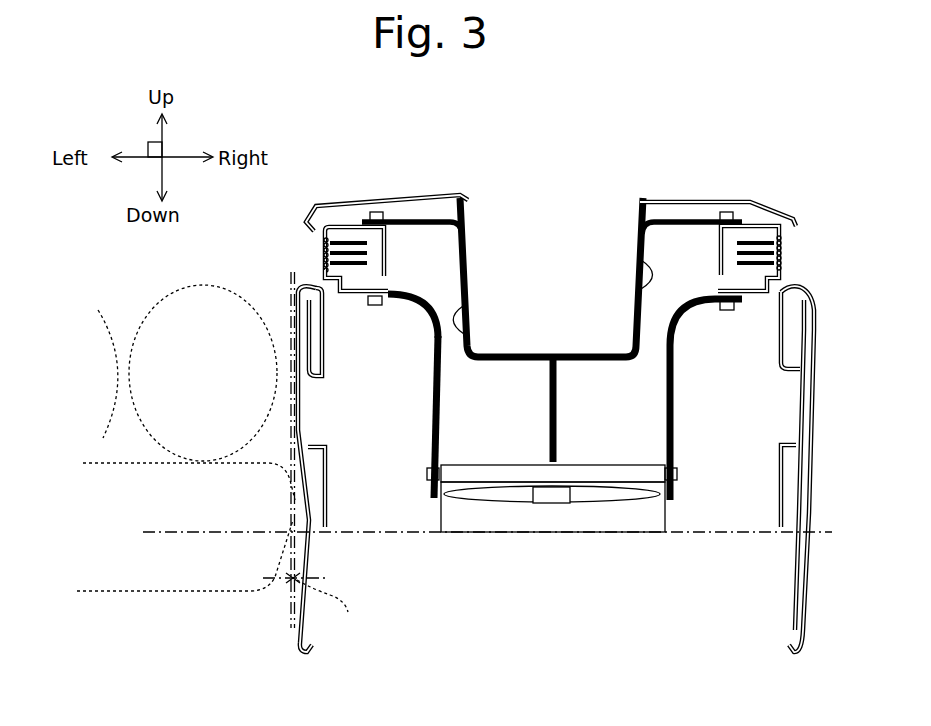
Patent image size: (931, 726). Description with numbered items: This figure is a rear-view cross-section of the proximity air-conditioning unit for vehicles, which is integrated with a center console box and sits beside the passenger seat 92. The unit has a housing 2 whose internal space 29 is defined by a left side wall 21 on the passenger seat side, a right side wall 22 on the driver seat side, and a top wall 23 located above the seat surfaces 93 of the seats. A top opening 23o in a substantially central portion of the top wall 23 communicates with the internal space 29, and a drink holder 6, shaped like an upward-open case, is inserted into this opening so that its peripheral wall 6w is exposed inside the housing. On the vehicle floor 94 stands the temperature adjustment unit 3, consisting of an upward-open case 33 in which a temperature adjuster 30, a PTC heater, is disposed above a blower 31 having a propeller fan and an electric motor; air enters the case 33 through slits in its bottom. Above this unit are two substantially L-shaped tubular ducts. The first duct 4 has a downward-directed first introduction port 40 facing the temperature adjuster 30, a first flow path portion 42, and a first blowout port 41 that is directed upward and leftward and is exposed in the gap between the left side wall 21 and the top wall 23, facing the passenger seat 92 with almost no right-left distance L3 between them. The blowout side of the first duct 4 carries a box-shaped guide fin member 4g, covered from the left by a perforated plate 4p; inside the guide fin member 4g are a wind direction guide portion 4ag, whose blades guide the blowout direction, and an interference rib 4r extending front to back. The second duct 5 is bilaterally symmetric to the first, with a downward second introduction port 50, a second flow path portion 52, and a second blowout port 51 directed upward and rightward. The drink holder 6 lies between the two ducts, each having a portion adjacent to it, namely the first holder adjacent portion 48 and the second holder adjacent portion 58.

The housing 2 is at (271, 637).
The temperature adjustment unit 3 is at (561, 543).
The first duct 4 is at (433, 375).
The guide fin member 4g is at (355, 224).
The interference rib 4r is at (398, 213).
The perforated plate 4p is at (327, 263).
The wind direction guide portion 4ag is at (375, 253).
The second duct 5 is at (675, 362).
The drink holder 6 is at (640, 214).
The peripheral wall 6w is at (434, 318).
The left side wall 21 is at (302, 405).
The right side wall 22 is at (786, 405).
The top wall 23 is at (657, 189).
The top opening 23o is at (471, 193).
The internal space 29 is at (768, 358).
The temperature adjuster 30 is at (590, 465).
The blower 31 is at (470, 498).
The case 33 is at (664, 518).
The first introduction port 40 is at (498, 464).
The first blowout port 41 is at (313, 223).
The first flow path portion 42 is at (492, 385).
The first holder adjacent portion 48 is at (466, 310).
The second introduction port 50 is at (623, 462).
The second blowout port 51 is at (800, 253).
The second flow path portion 52 is at (605, 373).
The second holder adjacent portion 58 is at (640, 270).
The passenger seat 92 is at (106, 578).
The seat surface 93 is at (109, 463).
The floor 94 is at (375, 522).
The distance L3 is at (311, 455).